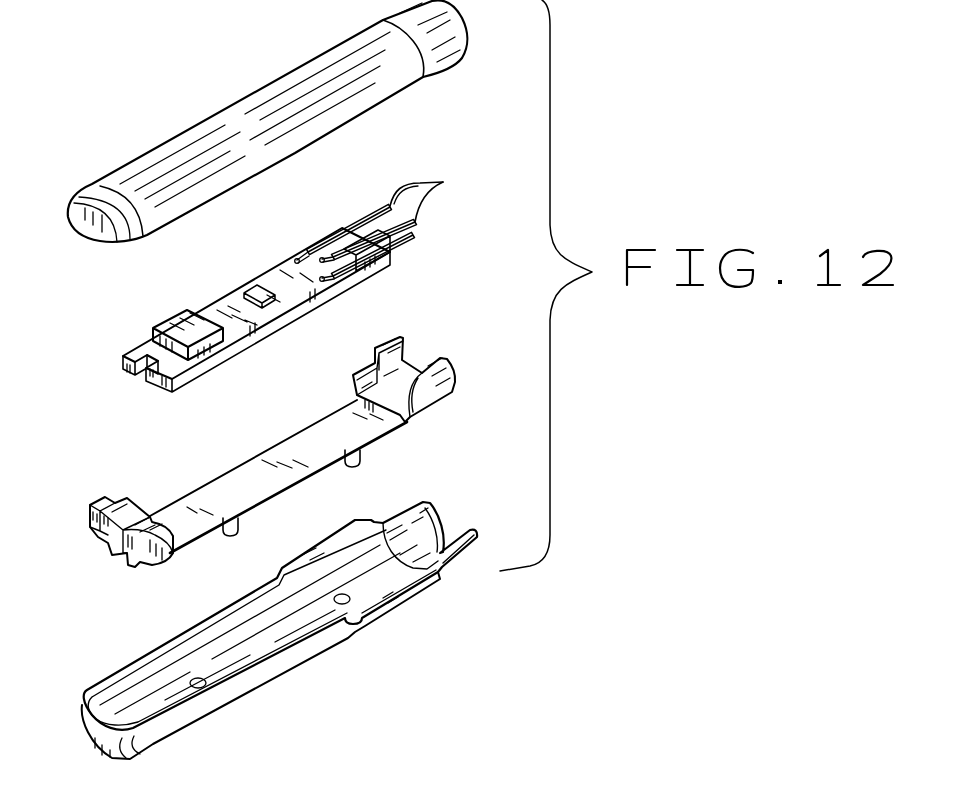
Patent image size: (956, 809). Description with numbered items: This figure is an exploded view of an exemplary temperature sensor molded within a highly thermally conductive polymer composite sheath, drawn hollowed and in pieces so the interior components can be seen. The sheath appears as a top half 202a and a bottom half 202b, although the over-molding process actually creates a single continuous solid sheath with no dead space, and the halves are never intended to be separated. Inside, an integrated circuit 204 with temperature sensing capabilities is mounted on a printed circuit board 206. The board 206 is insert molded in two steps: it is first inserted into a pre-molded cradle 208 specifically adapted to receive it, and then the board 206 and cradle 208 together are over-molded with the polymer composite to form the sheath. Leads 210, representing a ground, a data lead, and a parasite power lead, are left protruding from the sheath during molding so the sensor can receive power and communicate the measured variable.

The top half 202a is at (240, 98).
The bottom half 202b is at (287, 666).
The integrated circuit 204 is at (170, 320).
The printed circuit board 206 is at (117, 388).
The cradle 208 is at (103, 557).
The leads 210 is at (443, 182).